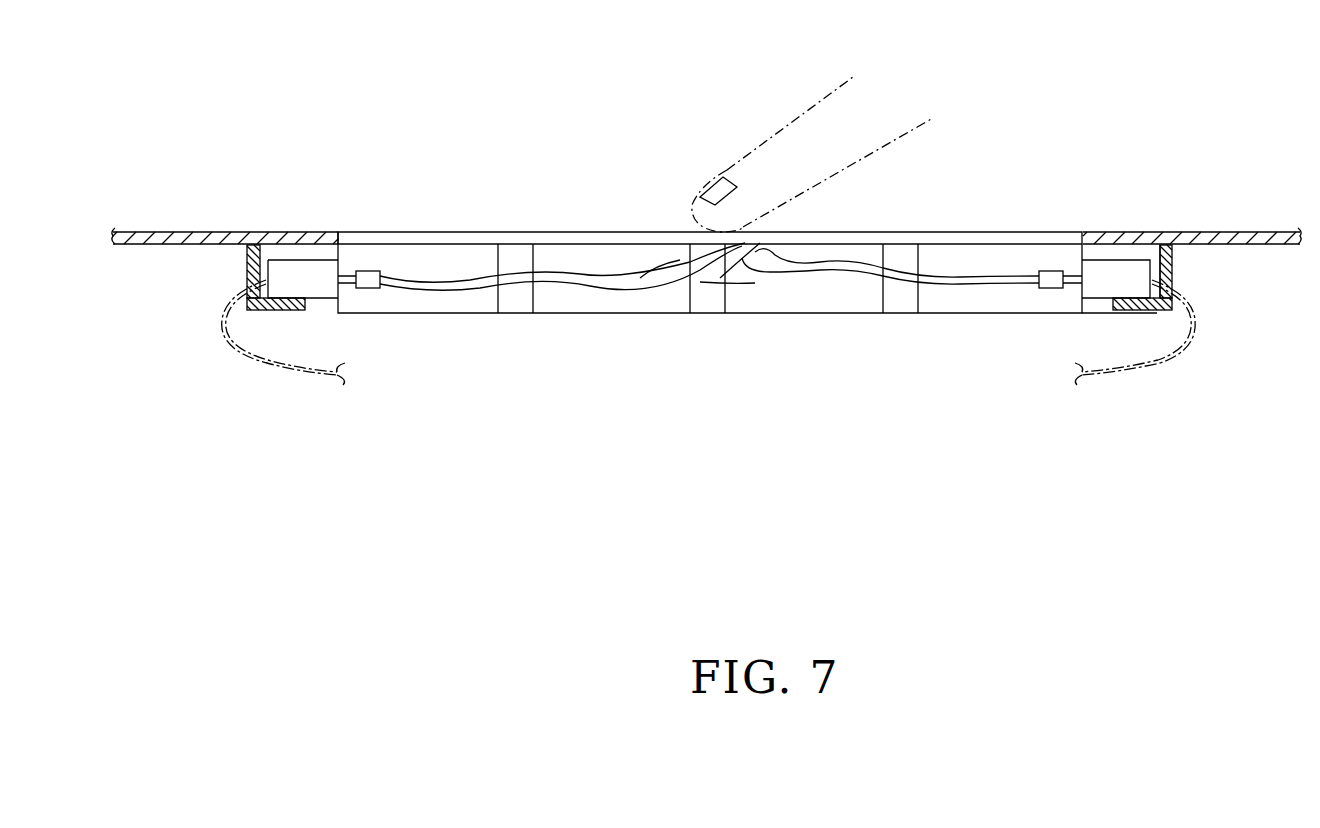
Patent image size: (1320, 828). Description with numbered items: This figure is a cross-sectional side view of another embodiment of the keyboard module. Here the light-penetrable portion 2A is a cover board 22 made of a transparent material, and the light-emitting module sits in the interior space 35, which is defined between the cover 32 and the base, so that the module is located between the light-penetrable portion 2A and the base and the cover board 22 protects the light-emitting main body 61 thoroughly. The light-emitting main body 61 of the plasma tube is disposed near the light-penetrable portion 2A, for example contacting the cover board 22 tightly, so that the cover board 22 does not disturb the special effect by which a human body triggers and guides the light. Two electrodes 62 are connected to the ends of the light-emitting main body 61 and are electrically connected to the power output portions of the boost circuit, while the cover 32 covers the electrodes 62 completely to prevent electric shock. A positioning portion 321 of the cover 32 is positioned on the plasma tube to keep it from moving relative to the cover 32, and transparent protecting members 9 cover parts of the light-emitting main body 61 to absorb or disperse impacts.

The light-penetrable portion 2A is at (348, 217).
The cover board 22 is at (613, 232).
The cover 32 is at (226, 232).
The positioning portion 321 is at (1172, 268).
The interior space 35 is at (192, 287).
The light-emitting main body 61 is at (417, 255).
The electrodes 62 is at (1113, 258).
The protecting member 9 is at (517, 250).